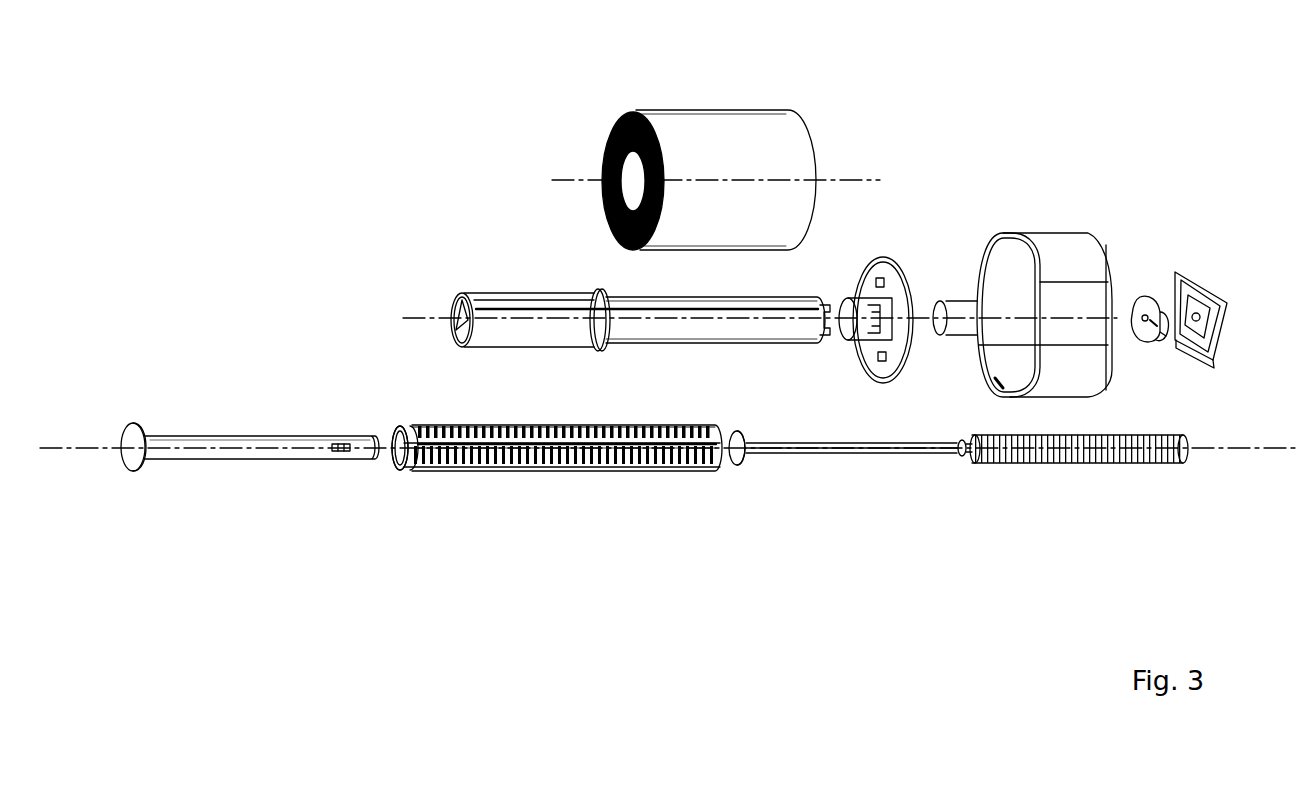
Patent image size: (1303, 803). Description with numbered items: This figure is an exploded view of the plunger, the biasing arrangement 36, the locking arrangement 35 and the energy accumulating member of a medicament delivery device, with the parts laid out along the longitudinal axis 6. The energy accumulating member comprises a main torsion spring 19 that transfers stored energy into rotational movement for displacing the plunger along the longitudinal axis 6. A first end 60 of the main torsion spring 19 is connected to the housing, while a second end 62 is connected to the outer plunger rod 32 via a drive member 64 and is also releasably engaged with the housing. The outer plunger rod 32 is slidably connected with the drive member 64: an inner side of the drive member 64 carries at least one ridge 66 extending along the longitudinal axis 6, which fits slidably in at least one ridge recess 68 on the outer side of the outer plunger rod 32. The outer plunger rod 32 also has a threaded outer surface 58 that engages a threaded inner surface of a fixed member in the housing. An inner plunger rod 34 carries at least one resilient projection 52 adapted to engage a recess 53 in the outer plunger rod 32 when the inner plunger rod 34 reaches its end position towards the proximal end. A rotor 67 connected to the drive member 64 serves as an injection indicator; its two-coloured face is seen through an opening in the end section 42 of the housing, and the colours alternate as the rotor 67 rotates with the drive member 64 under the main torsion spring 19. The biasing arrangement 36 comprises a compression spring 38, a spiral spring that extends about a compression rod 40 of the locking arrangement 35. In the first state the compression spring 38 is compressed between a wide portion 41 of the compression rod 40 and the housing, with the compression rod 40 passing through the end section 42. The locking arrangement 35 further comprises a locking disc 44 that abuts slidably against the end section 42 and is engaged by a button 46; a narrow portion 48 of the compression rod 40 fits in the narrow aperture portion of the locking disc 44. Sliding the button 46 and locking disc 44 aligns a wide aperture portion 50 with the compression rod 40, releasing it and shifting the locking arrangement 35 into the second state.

The longitudinal axis 6 is at (571, 178).
The main torsion spring 19 is at (748, 150).
The second end of the main torsion spring 62 is at (621, 118).
The first end of the main torsion spring 60 is at (616, 233).
The drive member 64 is at (718, 330).
The ridge 66 is at (470, 323).
The rotor 67 is at (900, 292).
The end section of the housing 42 is at (1055, 245).
The narrow portion of the compression rod / narrow aperture portion of the locking d 48 is at (1140, 316).
The wide aperture portion 50 is at (1150, 318).
The button 46 is at (1222, 329).
The locking disc 44 is at (1156, 342).
The inner plunger rod 34 is at (245, 443).
The resilient projection 52 is at (339, 455).
The recess 53 is at (396, 439).
The outer plunger rod 32 is at (440, 455).
The threaded outer surface 58 is at (500, 419).
The ridge recess 68 is at (612, 443).
The wide portion of the compression rod 41 is at (742, 462).
The compression rod 40 is at (840, 458).
The compression spring 38 is at (1048, 462).
The biasing arrangement 36 is at (1122, 496).
The locking arrangement 35 is at (1188, 514).